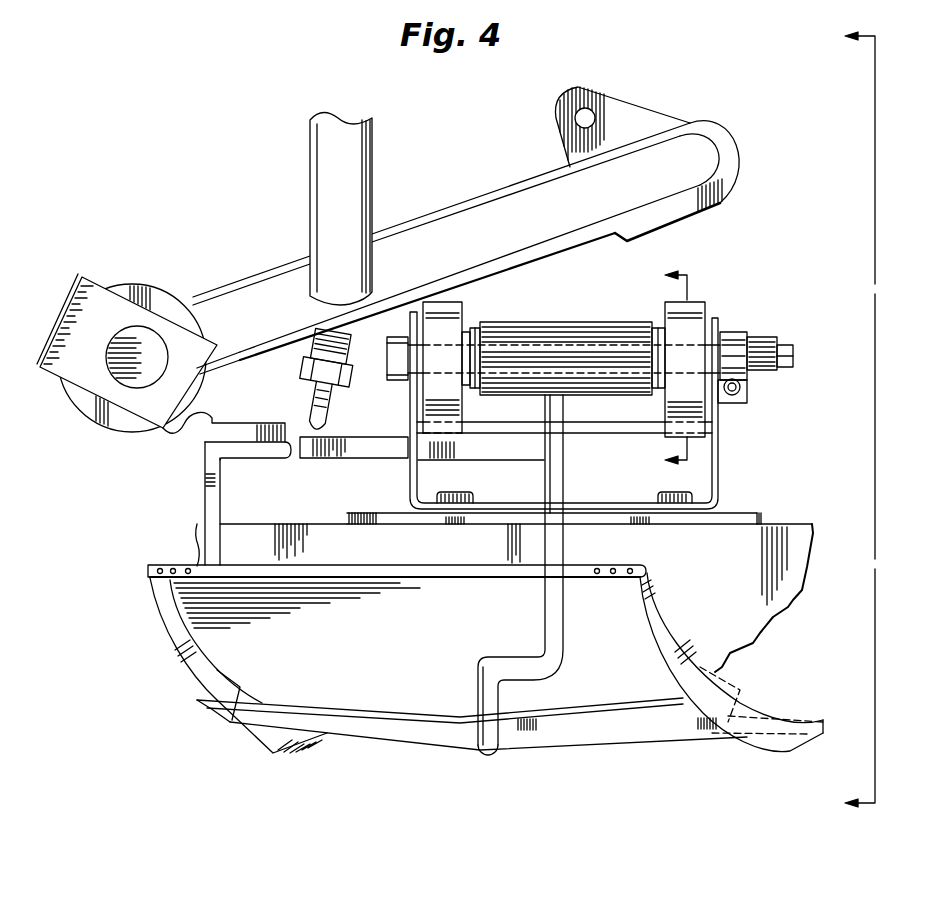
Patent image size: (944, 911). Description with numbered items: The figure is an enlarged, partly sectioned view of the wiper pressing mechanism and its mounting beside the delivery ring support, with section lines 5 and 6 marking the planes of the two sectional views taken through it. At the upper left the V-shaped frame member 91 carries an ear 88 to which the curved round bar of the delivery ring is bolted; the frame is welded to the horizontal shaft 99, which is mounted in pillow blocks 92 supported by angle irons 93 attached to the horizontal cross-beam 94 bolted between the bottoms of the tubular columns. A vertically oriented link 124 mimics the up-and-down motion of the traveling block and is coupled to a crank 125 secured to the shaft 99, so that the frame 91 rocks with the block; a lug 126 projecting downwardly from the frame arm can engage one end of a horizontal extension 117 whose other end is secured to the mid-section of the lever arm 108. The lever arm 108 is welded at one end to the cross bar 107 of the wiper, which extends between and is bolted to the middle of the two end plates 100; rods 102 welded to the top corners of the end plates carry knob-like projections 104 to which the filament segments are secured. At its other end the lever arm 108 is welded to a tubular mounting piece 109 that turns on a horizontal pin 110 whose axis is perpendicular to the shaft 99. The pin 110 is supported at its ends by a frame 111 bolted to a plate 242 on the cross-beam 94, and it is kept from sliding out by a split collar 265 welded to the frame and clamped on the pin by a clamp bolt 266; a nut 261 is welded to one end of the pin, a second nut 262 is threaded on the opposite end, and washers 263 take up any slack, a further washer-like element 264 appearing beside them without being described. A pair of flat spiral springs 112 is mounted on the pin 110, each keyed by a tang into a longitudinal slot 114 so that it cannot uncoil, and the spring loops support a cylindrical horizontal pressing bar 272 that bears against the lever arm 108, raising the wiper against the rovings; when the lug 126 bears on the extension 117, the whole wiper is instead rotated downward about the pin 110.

The section line 5- 5 is at (845, 423).
The section line 6- 6 is at (666, 374).
The ears 88 is at (643, 123).
The V-shaped frame member 91 is at (304, 284).
The pillow blocks 92 is at (160, 437).
The angle irons 93 is at (212, 506).
The horizontal cross-beam 94 is at (752, 587).
The horizontal shaft 99 is at (138, 346).
The end plates 100 is at (174, 645).
The rods 102 is at (148, 571).
The knob-like projections 104 is at (172, 565).
The cross bar 107 is at (470, 746).
The lever arm 108 is at (557, 668).
The tubular mounting piece 109 is at (625, 305).
The pin 110 is at (793, 360).
The frame 111 is at (720, 464).
The flat spiral springs 112 is at (463, 305).
The longitudinal slot 114 is at (504, 352).
The horizontal extension 117 is at (326, 459).
The link 124 is at (373, 152).
The crank 125 is at (193, 297).
The lug 126 is at (310, 408).
The plate 242 is at (760, 516).
The nut 261 is at (404, 381).
The second nut 262 is at (764, 393).
The washers 263 is at (426, 452).
The washer 264 is at (469, 390).
The split collar 265 is at (731, 332).
The clamp bolt 266 is at (733, 396).
The pressing bar 272 is at (581, 434).